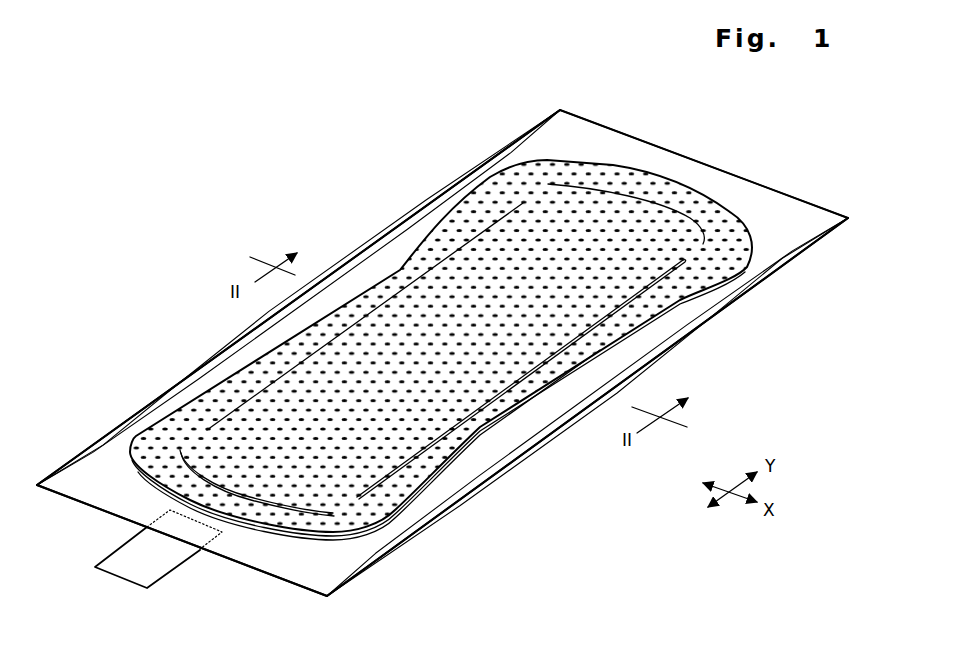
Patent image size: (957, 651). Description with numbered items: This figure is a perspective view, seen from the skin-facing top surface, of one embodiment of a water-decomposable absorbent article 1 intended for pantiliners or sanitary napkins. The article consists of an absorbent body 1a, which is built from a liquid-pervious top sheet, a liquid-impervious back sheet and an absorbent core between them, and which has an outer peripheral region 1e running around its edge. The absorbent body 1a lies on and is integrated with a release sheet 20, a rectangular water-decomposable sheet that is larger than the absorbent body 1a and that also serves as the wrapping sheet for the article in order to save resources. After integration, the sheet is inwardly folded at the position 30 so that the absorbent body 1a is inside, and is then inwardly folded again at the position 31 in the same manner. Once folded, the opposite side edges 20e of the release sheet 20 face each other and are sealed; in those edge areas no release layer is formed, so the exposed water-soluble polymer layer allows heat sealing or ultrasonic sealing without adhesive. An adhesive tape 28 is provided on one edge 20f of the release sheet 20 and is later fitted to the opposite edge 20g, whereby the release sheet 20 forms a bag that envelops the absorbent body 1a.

The absorbent article 1 is at (600, 105).
The absorbent body 1a is at (609, 235).
The outer peripheral region 1e is at (481, 210).
The release sheet 20 is at (447, 485).
The side edges 20e is at (68, 462).
The edge 20f is at (240, 562).
The opposite edge 20g is at (745, 198).
The adhesive tape 28 is at (133, 570).
The folding position 30 is at (380, 213).
The folding position 31 is at (185, 350).